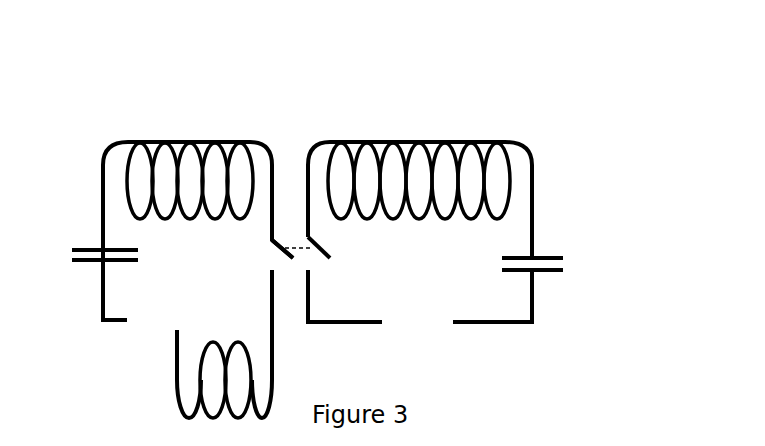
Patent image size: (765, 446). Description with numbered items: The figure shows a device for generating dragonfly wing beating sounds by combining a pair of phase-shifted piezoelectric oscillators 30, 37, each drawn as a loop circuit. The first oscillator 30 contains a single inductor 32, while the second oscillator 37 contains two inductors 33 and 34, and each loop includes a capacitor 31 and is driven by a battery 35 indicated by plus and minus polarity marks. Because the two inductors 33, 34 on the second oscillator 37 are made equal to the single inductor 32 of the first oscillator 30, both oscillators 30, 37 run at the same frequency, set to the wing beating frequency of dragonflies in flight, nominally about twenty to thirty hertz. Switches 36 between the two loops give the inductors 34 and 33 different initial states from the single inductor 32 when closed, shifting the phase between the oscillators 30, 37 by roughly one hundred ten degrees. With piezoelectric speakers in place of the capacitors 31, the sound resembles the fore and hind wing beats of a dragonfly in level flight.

The first oscillator 30 is at (535, 172).
The capacitor 31 is at (77, 273).
The single inductor 32 is at (435, 143).
The inductor 33 is at (192, 138).
The inductor 34 is at (168, 377).
The battery 35 is at (152, 305).
The switch 36 is at (263, 252).
The second oscillator 37 is at (95, 200).